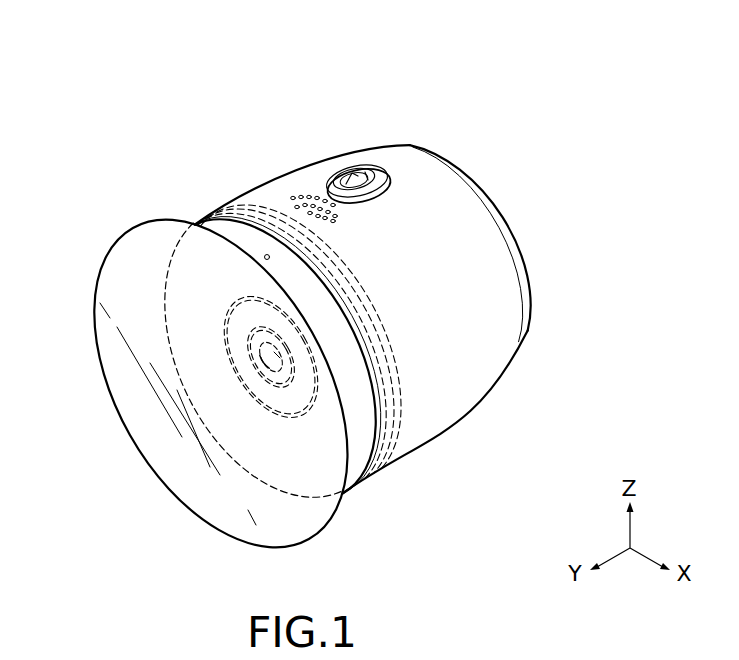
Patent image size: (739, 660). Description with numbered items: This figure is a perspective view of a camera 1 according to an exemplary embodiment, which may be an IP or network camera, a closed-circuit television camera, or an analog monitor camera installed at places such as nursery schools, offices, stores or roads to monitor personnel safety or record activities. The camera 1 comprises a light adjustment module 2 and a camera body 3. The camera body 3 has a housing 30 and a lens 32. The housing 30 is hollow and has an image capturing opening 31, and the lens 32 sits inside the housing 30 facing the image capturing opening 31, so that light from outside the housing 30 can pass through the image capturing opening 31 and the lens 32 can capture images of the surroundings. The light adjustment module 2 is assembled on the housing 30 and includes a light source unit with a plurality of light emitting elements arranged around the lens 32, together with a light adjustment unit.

The camera 1 is at (129, 117).
The light adjustment module 2 is at (180, 313).
The camera body 3 is at (241, 183).
The housing 30 is at (477, 270).
The image capturing opening 31 is at (163, 440).
The lens 32 is at (277, 355).